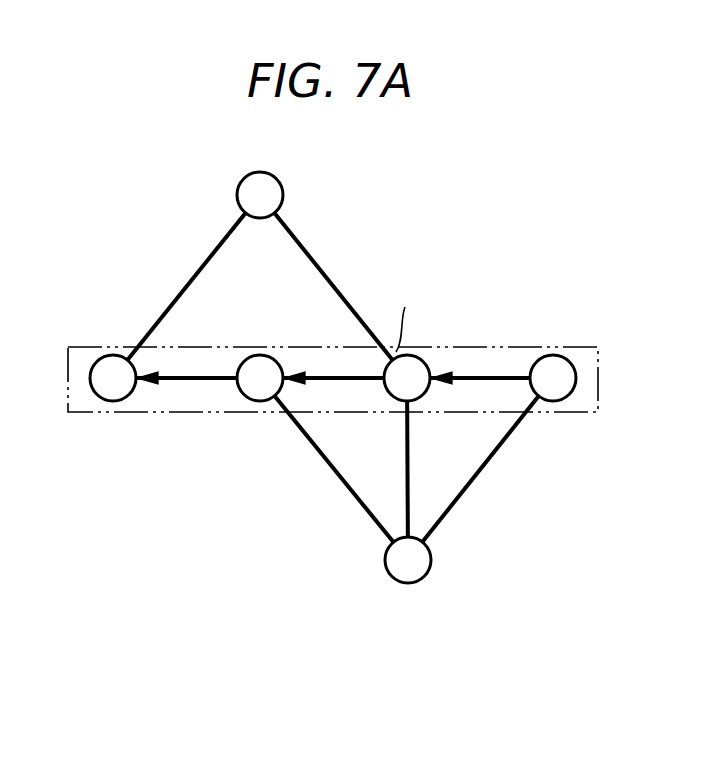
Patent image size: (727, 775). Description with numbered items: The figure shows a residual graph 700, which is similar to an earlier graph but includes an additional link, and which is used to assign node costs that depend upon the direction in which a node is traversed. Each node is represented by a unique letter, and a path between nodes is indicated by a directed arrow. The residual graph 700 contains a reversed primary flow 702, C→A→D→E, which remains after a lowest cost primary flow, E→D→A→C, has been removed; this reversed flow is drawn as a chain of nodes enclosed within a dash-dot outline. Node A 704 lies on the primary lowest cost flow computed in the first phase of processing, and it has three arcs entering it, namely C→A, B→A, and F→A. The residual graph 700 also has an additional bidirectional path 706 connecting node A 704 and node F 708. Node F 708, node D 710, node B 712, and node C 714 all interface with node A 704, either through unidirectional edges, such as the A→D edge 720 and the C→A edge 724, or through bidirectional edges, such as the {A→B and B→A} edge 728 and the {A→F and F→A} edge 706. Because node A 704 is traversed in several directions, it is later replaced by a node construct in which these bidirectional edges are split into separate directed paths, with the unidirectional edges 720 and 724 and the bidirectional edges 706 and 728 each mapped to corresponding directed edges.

The residual graph 700 is at (447, 252).
The reversed primary flow 702 is at (140, 413).
The node A 704 is at (428, 360).
The bidirectional path 706 is at (405, 467).
The node F 708 is at (428, 572).
The node D 710 is at (256, 352).
The node B 712 is at (242, 180).
The node C 714 is at (550, 354).
The A→D edge 720 is at (332, 382).
The C→A edge 724 is at (480, 382).
The bidirectional edge 728 is at (334, 266).